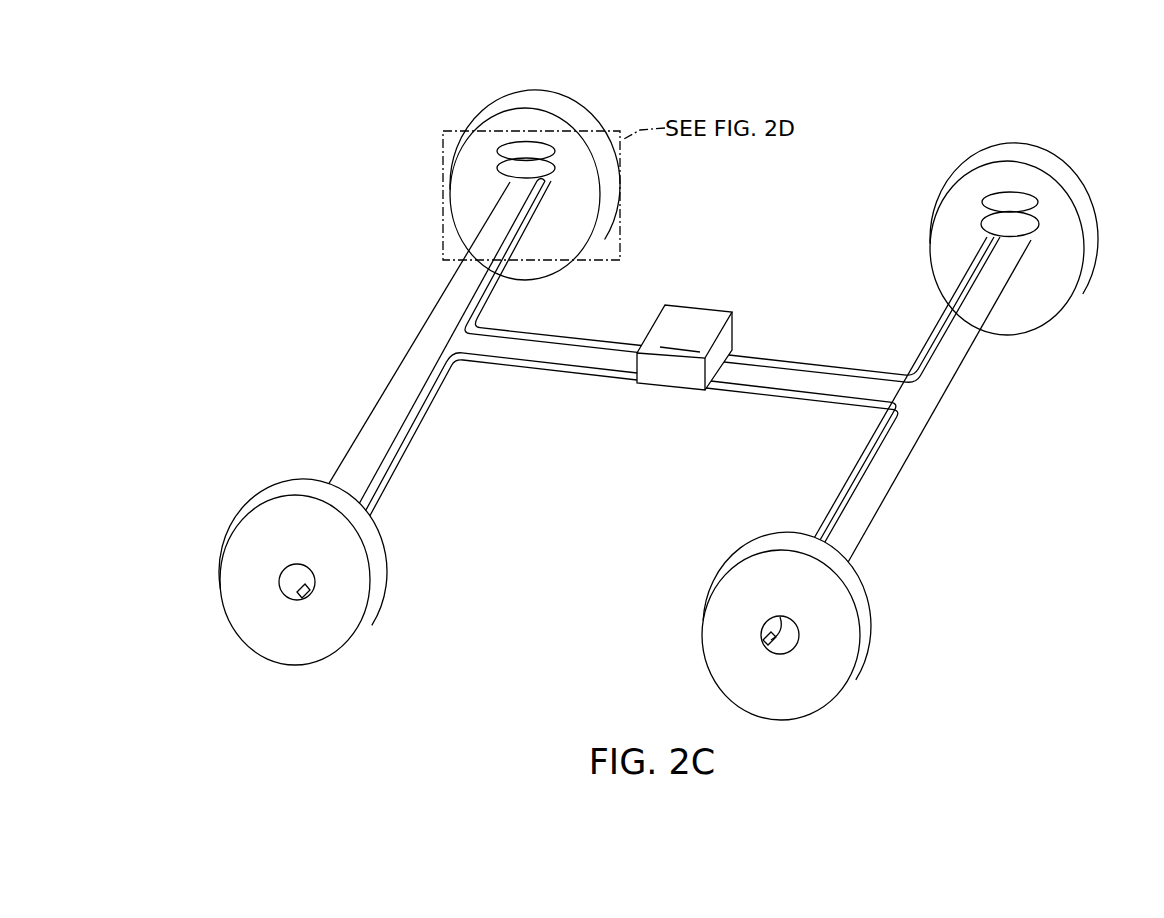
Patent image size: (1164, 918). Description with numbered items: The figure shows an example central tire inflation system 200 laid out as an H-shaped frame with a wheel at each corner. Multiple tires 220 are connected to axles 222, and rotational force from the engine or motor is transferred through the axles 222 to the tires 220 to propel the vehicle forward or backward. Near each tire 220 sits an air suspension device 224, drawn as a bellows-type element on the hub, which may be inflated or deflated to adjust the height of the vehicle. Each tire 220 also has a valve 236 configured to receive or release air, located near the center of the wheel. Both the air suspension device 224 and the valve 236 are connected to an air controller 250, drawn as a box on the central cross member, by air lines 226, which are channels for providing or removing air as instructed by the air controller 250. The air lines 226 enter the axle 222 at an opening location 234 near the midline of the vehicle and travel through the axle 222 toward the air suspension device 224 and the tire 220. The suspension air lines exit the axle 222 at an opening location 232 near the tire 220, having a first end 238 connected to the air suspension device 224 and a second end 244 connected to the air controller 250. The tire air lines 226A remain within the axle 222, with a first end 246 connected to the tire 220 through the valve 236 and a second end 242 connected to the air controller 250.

The central tire inflation system 200 is at (222, 165).
The tire 220 is at (563, 95).
The axle 222 is at (440, 300).
The air suspension device 224 is at (525, 148).
The air lines 226 is at (764, 417).
The tire air lines 226A is at (305, 565).
The opening location 232 is at (504, 189).
The opening location 234 is at (436, 328).
The valve 236 is at (292, 600).
The first end 238 is at (570, 150).
The second end 242 is at (634, 318).
The second end 244 is at (626, 396).
The first end 246 is at (276, 585).
The air controller 250 is at (710, 318).